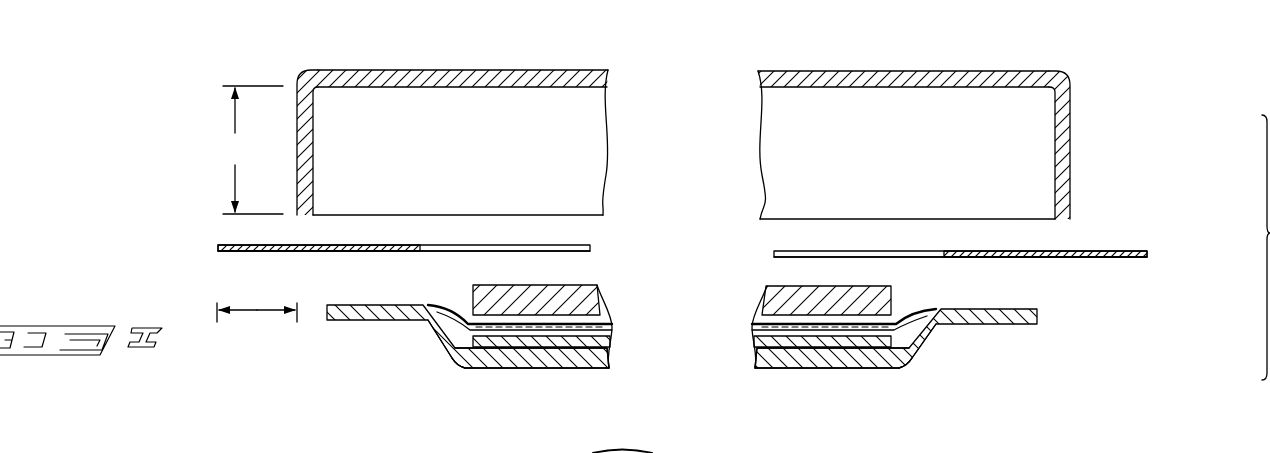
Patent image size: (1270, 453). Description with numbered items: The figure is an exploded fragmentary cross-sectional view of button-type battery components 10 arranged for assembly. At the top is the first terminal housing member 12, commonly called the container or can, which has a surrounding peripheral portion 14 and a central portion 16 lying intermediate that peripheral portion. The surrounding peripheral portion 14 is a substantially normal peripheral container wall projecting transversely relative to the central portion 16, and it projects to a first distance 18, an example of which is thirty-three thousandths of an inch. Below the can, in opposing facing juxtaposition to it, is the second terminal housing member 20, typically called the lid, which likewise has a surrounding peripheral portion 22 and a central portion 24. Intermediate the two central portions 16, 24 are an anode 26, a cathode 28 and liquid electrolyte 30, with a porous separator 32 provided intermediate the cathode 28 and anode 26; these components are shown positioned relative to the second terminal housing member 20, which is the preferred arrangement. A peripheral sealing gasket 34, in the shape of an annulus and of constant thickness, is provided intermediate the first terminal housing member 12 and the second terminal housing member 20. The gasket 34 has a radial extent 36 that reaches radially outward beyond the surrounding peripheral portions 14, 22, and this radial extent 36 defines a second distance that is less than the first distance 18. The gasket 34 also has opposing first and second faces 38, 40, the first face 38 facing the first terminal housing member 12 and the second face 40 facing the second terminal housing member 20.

The button-type battery components 10 is at (1187, 84).
The first terminal housing member 12 is at (677, 115).
The surrounding peripheral portion 14 is at (298, 172).
The central portion 16 is at (498, 70).
The first distance 18 is at (253, 150).
The second terminal housing member 20 is at (679, 342).
The surrounding peripheral portion 22 is at (679, 365).
The central portion 24 is at (537, 370).
The anode 26 is at (752, 343).
The cathode 28 is at (765, 298).
The liquid electrolyte 30 is at (453, 362).
The porous separator 32 is at (752, 325).
The peripheral sealing gasket 34 is at (680, 254).
The radial extent 36 is at (257, 324).
The first face 38 is at (240, 244).
The second face 40 is at (263, 251).